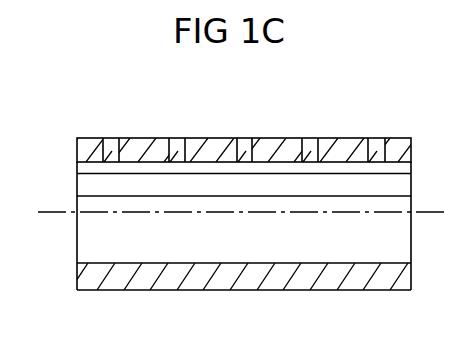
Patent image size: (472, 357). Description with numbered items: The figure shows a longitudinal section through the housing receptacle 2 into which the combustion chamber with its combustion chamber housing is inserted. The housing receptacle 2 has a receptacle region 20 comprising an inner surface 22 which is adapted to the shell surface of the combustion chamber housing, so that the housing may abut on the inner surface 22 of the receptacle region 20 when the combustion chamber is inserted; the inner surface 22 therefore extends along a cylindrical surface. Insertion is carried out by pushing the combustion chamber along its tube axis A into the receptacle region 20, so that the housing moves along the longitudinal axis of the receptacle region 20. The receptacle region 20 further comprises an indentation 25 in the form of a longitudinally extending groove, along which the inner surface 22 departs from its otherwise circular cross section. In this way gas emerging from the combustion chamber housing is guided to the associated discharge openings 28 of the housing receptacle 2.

The housing receptacle 2 is at (270, 150).
The receptacle region 20 is at (298, 261).
The inner surface 22 is at (133, 264).
The indentation 25 is at (395, 185).
The discharge openings 28 is at (172, 145).
The tube axis A is at (425, 211).